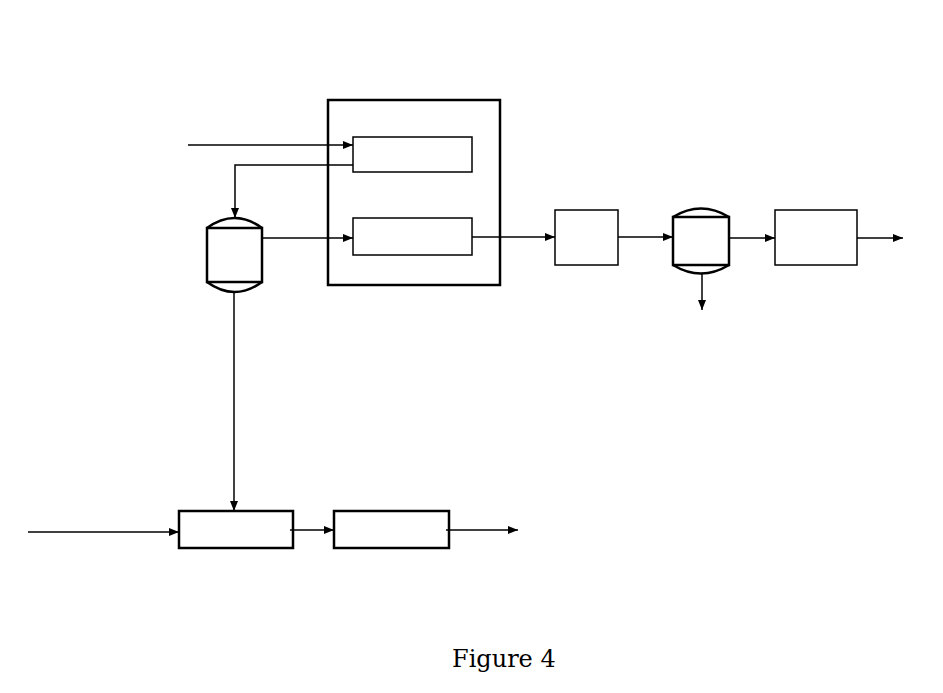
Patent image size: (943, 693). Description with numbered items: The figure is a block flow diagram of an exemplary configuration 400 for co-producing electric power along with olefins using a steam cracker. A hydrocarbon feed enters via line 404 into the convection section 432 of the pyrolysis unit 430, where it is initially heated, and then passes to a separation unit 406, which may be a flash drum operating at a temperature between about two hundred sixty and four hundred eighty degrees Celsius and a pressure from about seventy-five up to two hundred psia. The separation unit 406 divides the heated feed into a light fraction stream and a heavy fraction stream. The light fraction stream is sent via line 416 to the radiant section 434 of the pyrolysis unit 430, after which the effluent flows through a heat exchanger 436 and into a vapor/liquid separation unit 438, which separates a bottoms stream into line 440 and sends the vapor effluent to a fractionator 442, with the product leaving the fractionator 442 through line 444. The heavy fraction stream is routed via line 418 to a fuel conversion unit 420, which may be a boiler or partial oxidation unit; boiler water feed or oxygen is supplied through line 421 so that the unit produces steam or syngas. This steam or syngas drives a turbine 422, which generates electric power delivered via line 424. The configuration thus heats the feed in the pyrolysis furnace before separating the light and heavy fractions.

The configuration 400 is at (174, 62).
The line 404 is at (225, 145).
The separation unit 406 is at (203, 253).
The line 416 is at (315, 233).
The line 418 is at (233, 383).
The fuel conversion unit 420 is at (197, 510).
The line 421 is at (135, 528).
The turbine 422 is at (392, 510).
The line 424 is at (492, 527).
The pyrolysis unit 430 is at (343, 99).
The convection section 432 is at (412, 154).
The radiant section 434 is at (412, 236).
The heat exchanger 436 is at (583, 208).
The vapor/liquid separation unit 438 is at (702, 208).
The line 440 is at (693, 282).
The fractionator 442 is at (812, 208).
The product stream 444 is at (877, 232).